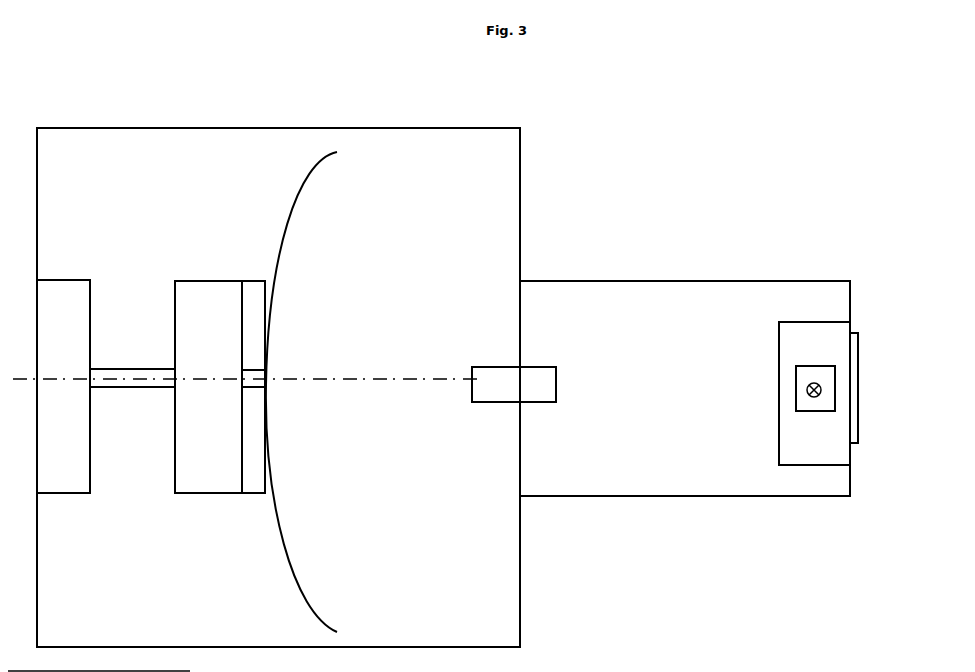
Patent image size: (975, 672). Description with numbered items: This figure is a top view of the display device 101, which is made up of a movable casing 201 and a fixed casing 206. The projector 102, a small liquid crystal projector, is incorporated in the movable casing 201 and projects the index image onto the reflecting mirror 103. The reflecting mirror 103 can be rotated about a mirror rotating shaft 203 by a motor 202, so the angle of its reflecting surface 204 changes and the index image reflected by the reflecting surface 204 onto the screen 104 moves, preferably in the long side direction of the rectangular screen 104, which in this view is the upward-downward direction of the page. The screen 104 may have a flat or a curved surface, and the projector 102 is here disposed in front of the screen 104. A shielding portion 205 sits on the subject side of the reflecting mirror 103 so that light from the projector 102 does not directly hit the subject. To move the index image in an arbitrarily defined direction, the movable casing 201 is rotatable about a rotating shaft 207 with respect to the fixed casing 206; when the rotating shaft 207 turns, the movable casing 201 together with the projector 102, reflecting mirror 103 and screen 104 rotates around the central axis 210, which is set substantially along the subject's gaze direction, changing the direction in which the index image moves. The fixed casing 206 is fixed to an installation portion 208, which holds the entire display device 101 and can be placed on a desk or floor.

The display device 101 is at (598, 202).
The projector 102 is at (532, 375).
The reflecting mirror 103 is at (816, 366).
The screen 104 is at (296, 190).
The movable casing 201 is at (636, 488).
The motor 202 is at (788, 430).
The mirror rotating shaft 203 is at (857, 400).
The reflecting surface 204 is at (857, 398).
The shielding portion 205 is at (857, 358).
The fixed casing 206 is at (48, 288).
The rotating shaft 207 is at (110, 370).
The installation portion 208 is at (202, 137).
The central axis 210 is at (322, 379).